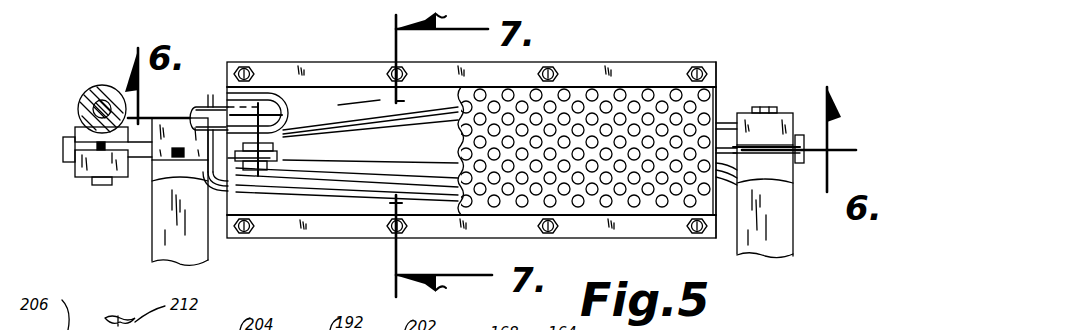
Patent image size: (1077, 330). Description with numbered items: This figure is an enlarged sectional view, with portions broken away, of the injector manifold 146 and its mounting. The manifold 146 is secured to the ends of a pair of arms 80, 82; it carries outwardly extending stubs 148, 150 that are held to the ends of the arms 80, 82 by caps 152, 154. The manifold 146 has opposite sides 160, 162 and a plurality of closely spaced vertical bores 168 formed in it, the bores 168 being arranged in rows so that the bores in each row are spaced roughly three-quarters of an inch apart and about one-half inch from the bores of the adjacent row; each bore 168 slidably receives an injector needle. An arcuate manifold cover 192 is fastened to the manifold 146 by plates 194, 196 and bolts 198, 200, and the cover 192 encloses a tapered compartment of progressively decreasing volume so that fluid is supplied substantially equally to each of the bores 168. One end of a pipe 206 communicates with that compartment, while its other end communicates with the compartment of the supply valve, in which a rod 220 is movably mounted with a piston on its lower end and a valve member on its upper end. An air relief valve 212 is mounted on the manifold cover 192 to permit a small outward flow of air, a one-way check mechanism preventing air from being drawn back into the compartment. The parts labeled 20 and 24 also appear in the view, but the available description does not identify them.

The conveyor 20 is at (218, 0).
The support 24 is at (726, 4).
The arm 80 is at (165, 235).
The arm 82 is at (785, 246).
The injector manifold 146 is at (586, 58).
The stub 148 is at (145, 153).
The stub 150 is at (725, 130).
The cap 152 is at (161, 118).
The cap 154 is at (782, 125).
The side 160 is at (648, 64).
The side 162 is at (676, 240).
The vertical bores 168 is at (546, 205).
The arcuate manifold cover 192 is at (412, 133).
The plate 194 is at (316, 70).
The plate 196 is at (330, 228).
The bolt 198 is at (391, 69).
The bolt 200 is at (402, 232).
The pipe 206 is at (210, 106).
The air relief valve 212 is at (280, 148).
The rod 220 is at (95, 88).